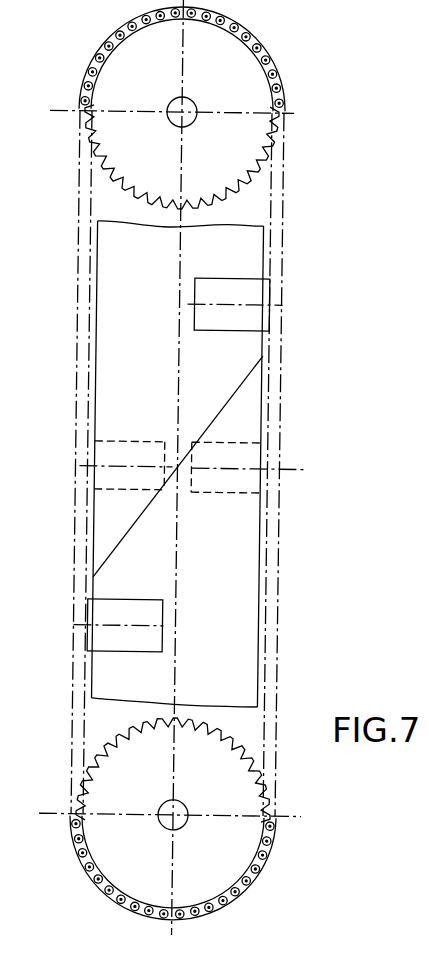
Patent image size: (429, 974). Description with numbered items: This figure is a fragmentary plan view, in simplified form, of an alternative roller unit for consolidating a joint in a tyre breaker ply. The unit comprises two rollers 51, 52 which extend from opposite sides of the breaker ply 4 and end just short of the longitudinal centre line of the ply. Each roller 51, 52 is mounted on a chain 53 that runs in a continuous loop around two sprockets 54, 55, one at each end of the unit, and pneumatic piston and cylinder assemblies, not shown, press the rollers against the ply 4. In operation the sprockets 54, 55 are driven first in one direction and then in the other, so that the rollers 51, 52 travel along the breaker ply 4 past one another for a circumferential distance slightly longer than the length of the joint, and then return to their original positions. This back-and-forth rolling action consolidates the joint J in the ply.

The breaker ply 4 is at (247, 627).
The roller 51 is at (256, 319).
The roller 52 is at (112, 479).
The chain 53 is at (278, 203).
The sprocket 54 is at (122, 53).
The sprocket 55 is at (252, 853).
The joint J is at (128, 537).